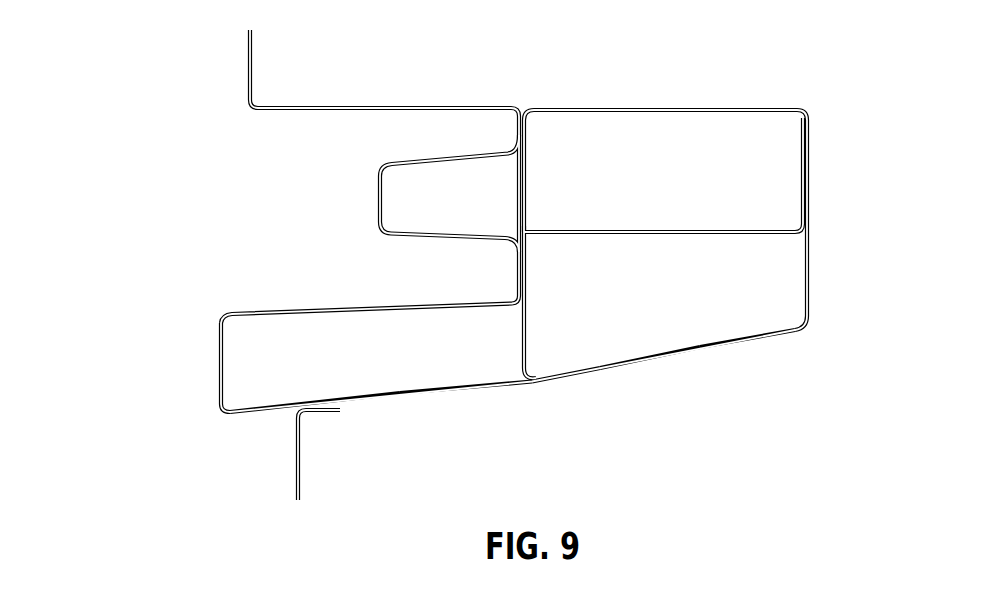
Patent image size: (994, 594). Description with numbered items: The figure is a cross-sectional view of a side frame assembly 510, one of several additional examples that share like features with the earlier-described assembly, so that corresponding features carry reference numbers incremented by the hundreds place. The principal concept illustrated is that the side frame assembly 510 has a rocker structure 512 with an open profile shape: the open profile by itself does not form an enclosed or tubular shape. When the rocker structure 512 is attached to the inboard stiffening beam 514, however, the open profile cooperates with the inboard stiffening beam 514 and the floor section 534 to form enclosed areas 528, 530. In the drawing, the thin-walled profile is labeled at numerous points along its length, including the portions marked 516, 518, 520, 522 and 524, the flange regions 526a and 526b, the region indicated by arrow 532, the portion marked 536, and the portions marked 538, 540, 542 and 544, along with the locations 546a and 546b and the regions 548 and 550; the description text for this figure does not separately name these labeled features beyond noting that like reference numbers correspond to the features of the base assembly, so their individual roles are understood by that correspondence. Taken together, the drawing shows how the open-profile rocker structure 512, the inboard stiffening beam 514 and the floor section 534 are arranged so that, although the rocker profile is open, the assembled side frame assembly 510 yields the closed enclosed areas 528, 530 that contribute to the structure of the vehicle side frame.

The side frame assembly 510 is at (140, 37).
The rocker structure 512 is at (432, 430).
The inboard stiffening beam 514 is at (702, 389).
The upper wall 516 is at (452, 105).
The lower wall of first chamber 518 is at (462, 396).
The end wall of first chamber 520 is at (215, 367).
The connecting wall 522 is at (517, 267).
The upper wall of first chamber 524 is at (249, 311).
The first flange 526a is at (248, 62).
The second flange junction 526b is at (568, 379).
The enclosed area 528 is at (471, 213).
The enclosed area 530 is at (336, 388).
The body portion 532 is at (248, 194).
The floor section 534 is at (315, 105).
The flange 536 is at (665, 108).
The bottom wall of second chamber 538 is at (764, 342).
The inner wall 540 is at (527, 294).
The outer wall 542 is at (808, 288).
The divider wall 544 is at (623, 228).
The first junction 546a is at (548, 230).
The second junction 546b is at (808, 213).
The upper chamber 548 is at (712, 176).
The lower chamber 550 is at (707, 350).